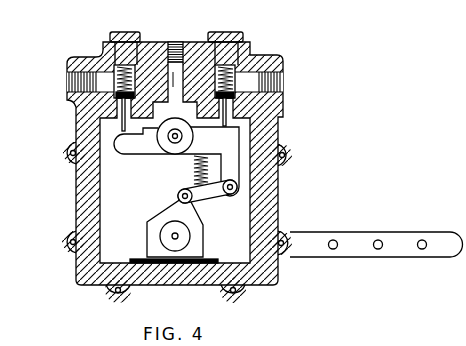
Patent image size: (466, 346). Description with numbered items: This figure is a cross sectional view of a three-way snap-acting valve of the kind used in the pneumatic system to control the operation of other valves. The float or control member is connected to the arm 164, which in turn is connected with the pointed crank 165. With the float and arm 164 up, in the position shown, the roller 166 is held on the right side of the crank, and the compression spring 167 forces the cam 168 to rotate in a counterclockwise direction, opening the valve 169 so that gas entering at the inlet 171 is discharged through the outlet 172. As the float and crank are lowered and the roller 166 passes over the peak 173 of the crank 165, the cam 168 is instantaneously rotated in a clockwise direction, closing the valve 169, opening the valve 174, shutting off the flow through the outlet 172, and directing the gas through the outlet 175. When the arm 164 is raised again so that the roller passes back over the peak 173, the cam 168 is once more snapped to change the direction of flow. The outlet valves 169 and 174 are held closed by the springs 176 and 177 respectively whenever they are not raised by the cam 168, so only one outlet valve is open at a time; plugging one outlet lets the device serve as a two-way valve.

The arm 164 is at (358, 232).
The pointed crank 165 is at (160, 213).
The roller 166 is at (188, 203).
The compression spring 167 is at (194, 170).
The cam 168 is at (239, 142).
The valve 169 is at (230, 97).
The inlet 171 is at (183, 40).
The outlet 172 is at (283, 80).
The peak 173 is at (180, 197).
The valve 174 is at (77, 105).
The outlet 175 is at (67, 80).
The spring 176 is at (236, 68).
The spring 177 is at (115, 66).